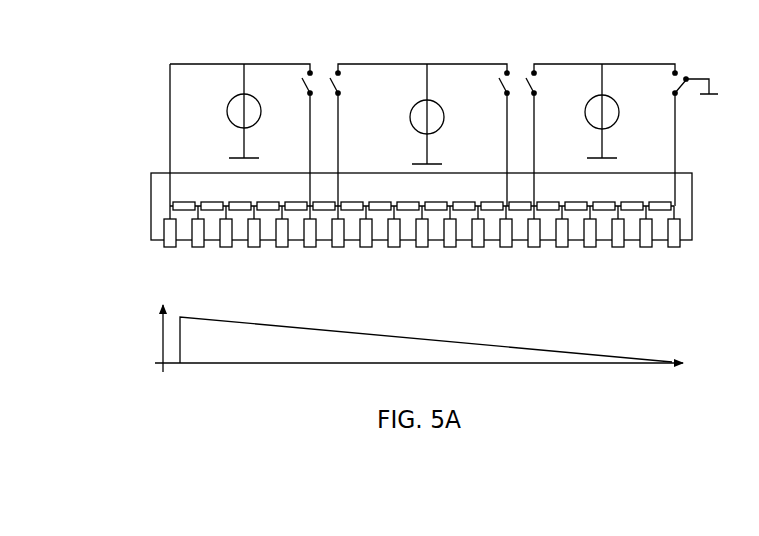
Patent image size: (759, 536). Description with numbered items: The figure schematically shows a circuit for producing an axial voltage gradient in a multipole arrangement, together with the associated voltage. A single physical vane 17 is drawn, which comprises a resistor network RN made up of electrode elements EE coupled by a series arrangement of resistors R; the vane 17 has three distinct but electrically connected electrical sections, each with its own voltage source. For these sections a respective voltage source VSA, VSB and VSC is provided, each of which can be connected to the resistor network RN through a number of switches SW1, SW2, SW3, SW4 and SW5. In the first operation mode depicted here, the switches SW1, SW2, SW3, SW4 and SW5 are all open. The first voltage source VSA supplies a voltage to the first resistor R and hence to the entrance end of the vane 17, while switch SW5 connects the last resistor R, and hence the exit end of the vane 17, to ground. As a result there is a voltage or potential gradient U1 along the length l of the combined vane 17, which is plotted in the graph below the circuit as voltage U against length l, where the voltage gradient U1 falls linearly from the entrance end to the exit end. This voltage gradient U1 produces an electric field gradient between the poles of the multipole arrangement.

The voltage source VSA is at (227, 111).
The voltage source VSB is at (438, 103).
The voltage source VSC is at (615, 98).
The switch SW1 is at (317, 78).
The switch SW2 is at (331, 84).
The switch SW3 is at (510, 82).
The switch SW4 is at (537, 86).
The switch SW5 is at (682, 84).
The resistor network RN is at (388, 233).
The resistor R is at (422, 195).
The electrode element EE is at (565, 247).
The vane 17 is at (693, 210).
The voltage U is at (150, 335).
The voltage gradient U1 is at (403, 335).
The length l is at (426, 364).